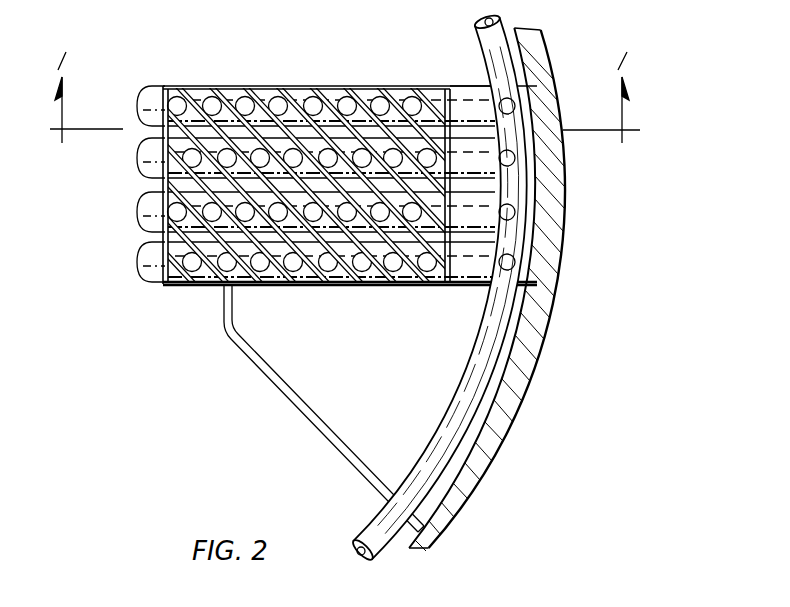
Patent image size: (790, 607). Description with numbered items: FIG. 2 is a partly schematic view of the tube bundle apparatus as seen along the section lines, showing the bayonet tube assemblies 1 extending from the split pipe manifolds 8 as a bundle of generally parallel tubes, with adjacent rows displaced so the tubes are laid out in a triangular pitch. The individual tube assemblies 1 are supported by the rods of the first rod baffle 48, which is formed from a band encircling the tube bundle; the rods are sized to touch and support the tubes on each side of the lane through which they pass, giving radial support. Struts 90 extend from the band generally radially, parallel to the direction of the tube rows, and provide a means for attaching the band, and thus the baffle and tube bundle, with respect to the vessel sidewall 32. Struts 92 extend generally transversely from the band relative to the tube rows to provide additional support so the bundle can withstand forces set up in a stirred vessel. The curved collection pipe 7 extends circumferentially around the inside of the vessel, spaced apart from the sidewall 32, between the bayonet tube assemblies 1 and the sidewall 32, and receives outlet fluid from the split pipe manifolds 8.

The bayonet tube assembly 1 is at (270, 90).
The first rod baffle 48 is at (194, 87).
The split pipe manifold 8 is at (133, 153).
The struts 90 is at (526, 98).
The curved collection pipe 7 is at (460, 400).
The sidewall 32 is at (536, 378).
The struts 92 is at (296, 418).